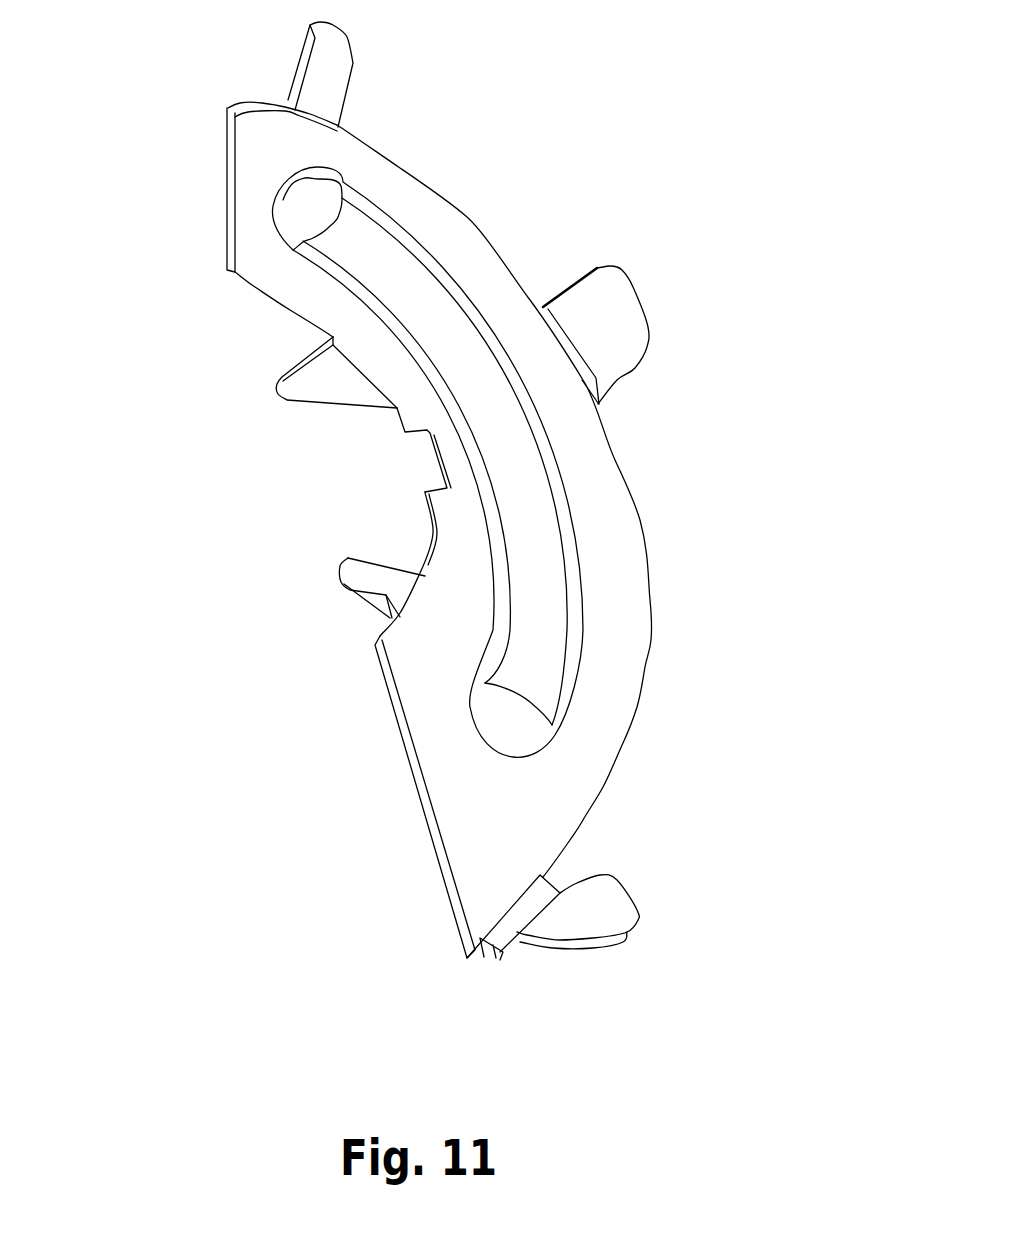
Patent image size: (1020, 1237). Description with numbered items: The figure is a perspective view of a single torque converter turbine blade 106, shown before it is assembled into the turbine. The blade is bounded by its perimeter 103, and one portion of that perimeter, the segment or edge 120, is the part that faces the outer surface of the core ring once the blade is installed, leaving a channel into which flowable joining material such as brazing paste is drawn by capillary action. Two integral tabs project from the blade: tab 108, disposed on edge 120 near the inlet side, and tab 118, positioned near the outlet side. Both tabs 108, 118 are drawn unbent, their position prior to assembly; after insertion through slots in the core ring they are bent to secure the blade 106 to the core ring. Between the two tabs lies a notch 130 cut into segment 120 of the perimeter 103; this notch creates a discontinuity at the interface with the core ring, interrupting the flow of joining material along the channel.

The torque converter turbine blade 106 is at (552, 171).
The perimeter 103 is at (652, 595).
The segment 120 is at (253, 290).
The tab 118 is at (278, 377).
The notch 130 is at (428, 461).
The tab 108 is at (338, 578).